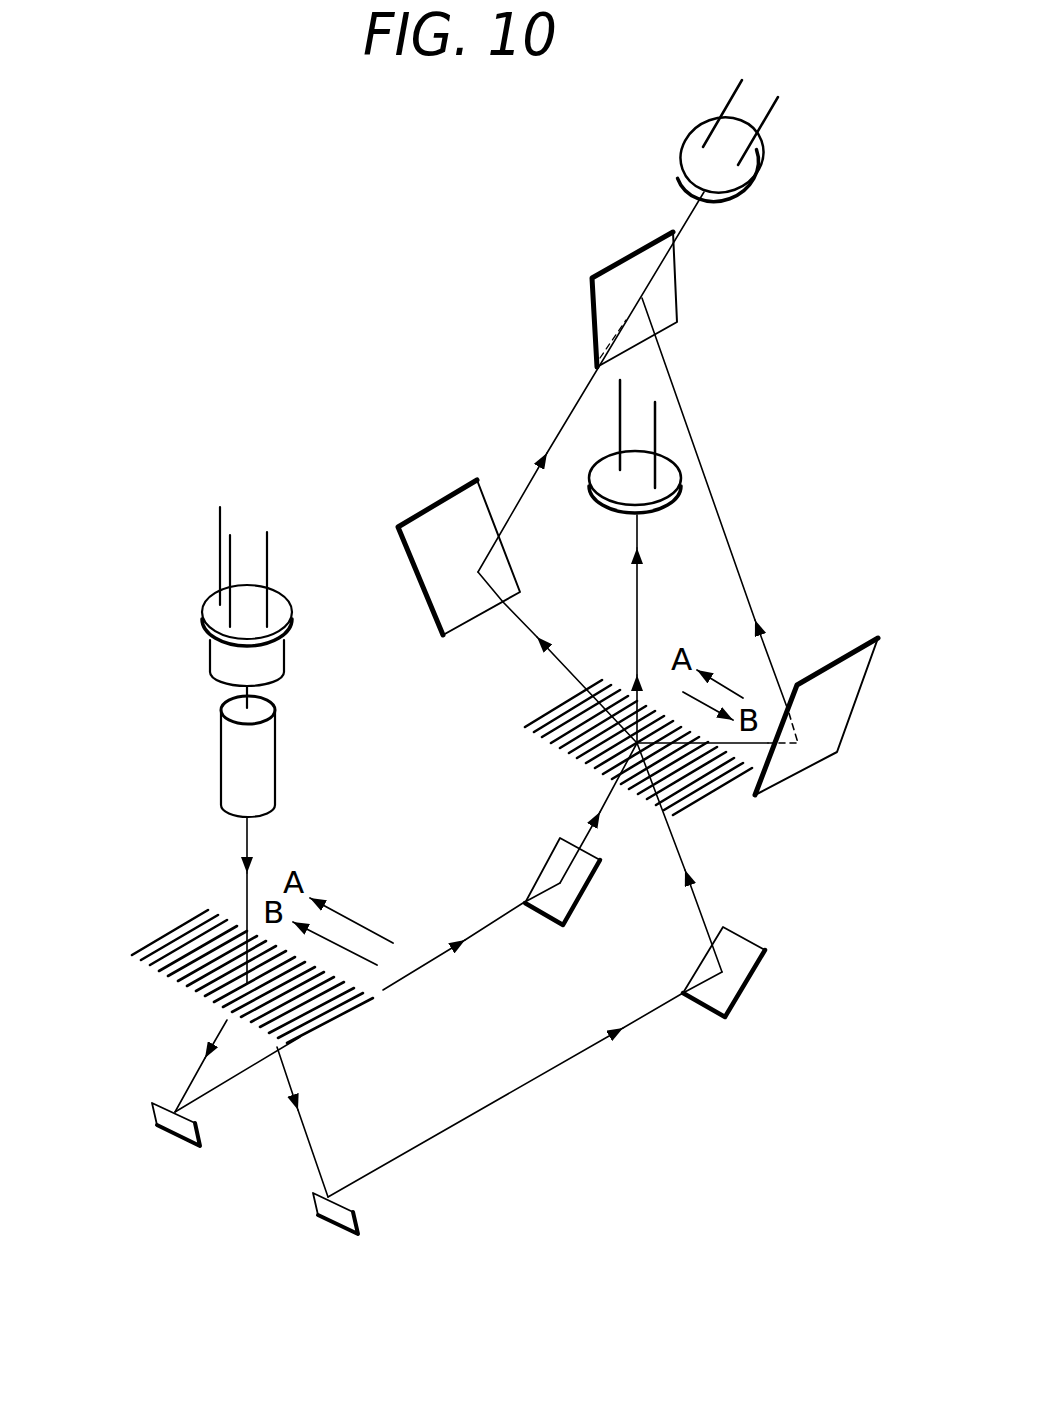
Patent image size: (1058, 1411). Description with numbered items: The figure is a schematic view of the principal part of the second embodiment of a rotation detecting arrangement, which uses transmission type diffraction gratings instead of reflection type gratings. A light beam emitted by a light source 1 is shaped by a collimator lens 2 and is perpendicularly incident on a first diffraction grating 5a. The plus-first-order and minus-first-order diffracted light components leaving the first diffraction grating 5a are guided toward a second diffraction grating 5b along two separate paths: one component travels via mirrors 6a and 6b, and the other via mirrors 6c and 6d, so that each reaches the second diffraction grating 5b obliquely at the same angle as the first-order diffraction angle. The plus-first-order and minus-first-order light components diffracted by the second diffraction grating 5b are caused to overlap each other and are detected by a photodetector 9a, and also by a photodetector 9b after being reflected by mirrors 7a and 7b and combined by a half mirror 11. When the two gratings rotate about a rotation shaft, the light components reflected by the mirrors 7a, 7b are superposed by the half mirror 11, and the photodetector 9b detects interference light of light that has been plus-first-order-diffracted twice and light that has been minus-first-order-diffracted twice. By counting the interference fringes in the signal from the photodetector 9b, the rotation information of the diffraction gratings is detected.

The light source 1 is at (218, 658).
The collimator lens 2 is at (232, 753).
The first diffraction grating 5a is at (193, 963).
The second diffraction grating 5b is at (567, 735).
The mirror 6a is at (175, 1130).
The mirror 6b is at (330, 1215).
The mirror 6c is at (580, 873).
The mirror 6d is at (747, 965).
The mirror 7a is at (437, 522).
The mirror 7b is at (840, 725).
The photodetector 9a is at (672, 475).
The photodetector 9b is at (753, 167).
The half mirror 11 is at (662, 302).